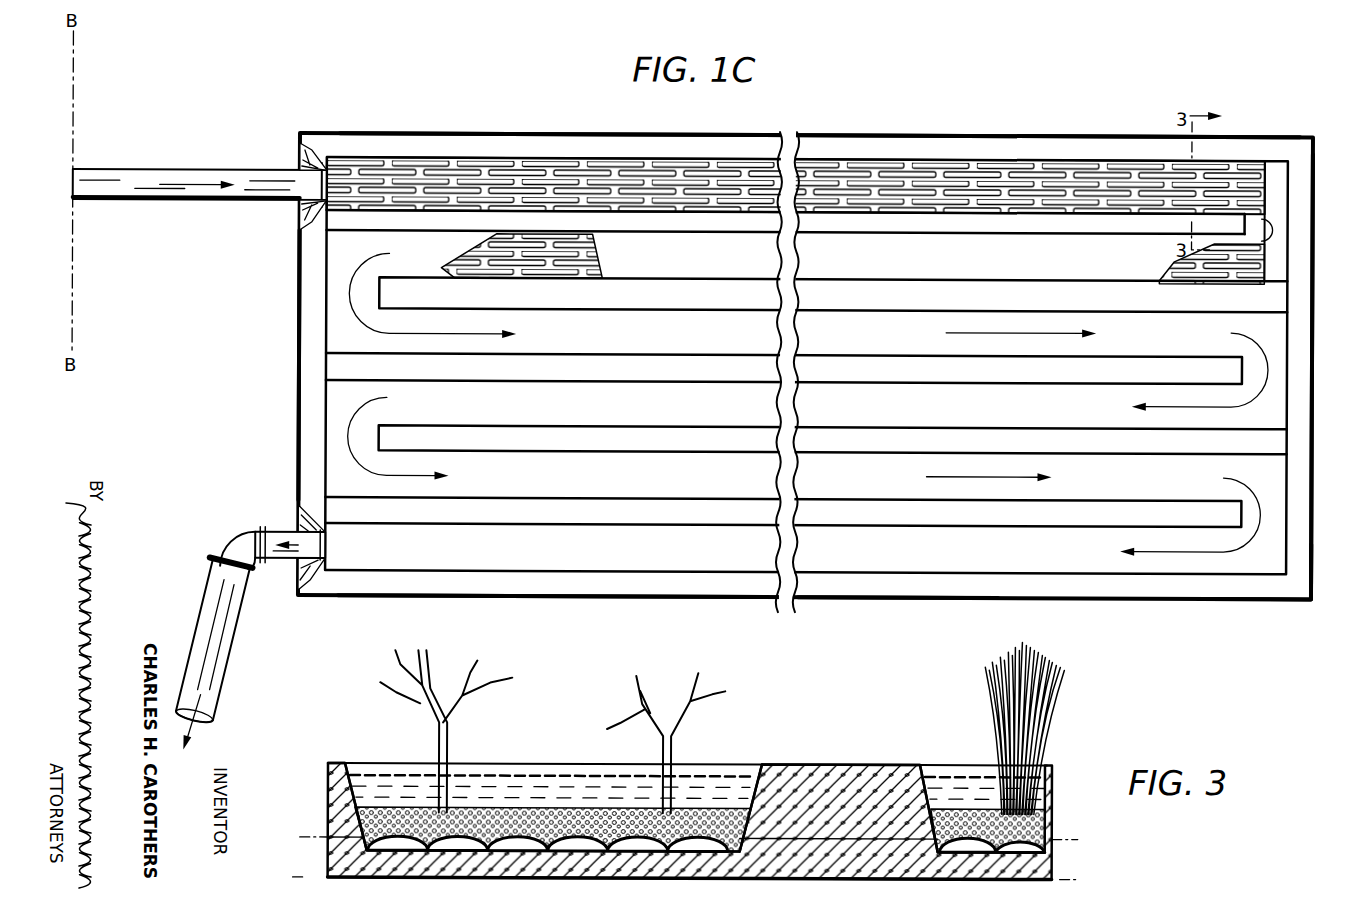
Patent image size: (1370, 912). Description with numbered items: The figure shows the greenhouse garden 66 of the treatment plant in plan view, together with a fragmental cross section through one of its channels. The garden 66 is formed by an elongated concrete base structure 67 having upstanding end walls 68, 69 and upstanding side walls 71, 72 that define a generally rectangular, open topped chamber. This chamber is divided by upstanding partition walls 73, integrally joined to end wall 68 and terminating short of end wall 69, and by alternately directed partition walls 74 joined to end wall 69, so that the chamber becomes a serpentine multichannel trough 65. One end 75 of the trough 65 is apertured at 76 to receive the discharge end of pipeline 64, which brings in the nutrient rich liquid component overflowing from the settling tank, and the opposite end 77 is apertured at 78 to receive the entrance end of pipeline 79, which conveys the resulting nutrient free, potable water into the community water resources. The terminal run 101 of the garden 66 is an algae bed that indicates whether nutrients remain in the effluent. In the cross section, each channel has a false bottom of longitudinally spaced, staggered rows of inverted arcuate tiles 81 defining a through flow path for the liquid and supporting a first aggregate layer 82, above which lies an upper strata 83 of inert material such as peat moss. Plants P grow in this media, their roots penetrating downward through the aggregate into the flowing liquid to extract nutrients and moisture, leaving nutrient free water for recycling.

In FIG. 1C, the pipeline 64 is at (118, 200).
In FIG. 1C, the multichannel trough 65 is at (857, 172).
In FIG. 3, the multichannel trough 65 is at (708, 788).
In FIG. 1C, the greenhouse garden 66 is at (901, 607).
In FIG. 1C, the concrete base structure 67 is at (1246, 562).
In FIG. 3, the concrete base structure 67 is at (460, 868).
In FIG. 1C, the end wall 68 is at (303, 313).
In FIG. 1C, the end wall 69 is at (1312, 322).
In FIG. 1C, the side wall 71 is at (568, 142).
In FIG. 3, the side wall 71 is at (331, 781).
In FIG. 1C, the side wall 72 is at (590, 586).
In FIG. 1C, the partition wall 73 is at (1017, 229).
In FIG. 3, the partition wall 73 is at (848, 778).
In FIG. 1C, the partition wall 74 is at (1073, 288).
In FIG. 1C, the end of trough 75 is at (335, 163).
In FIG. 1C, the aperture 76 is at (425, 288).
In FIG. 1C, the end of trough 77 is at (335, 571).
In FIG. 1C, the aperture 78 is at (330, 540).
In FIG. 1C, the pipeline 79 is at (212, 603).
In FIG. 1C, the inverted arcuate tiles 81 is at (405, 170).
In FIG. 3, the inverted arcuate tiles 81 is at (470, 826).
In FIG. 3, the first aggregate layer 82 is at (360, 818).
In FIG. 3, the upper strata of inert material 83 is at (387, 790).
In FIG. 1C, the terminal run 101 is at (843, 573).
In FIG. 3, the plants P is at (424, 658).